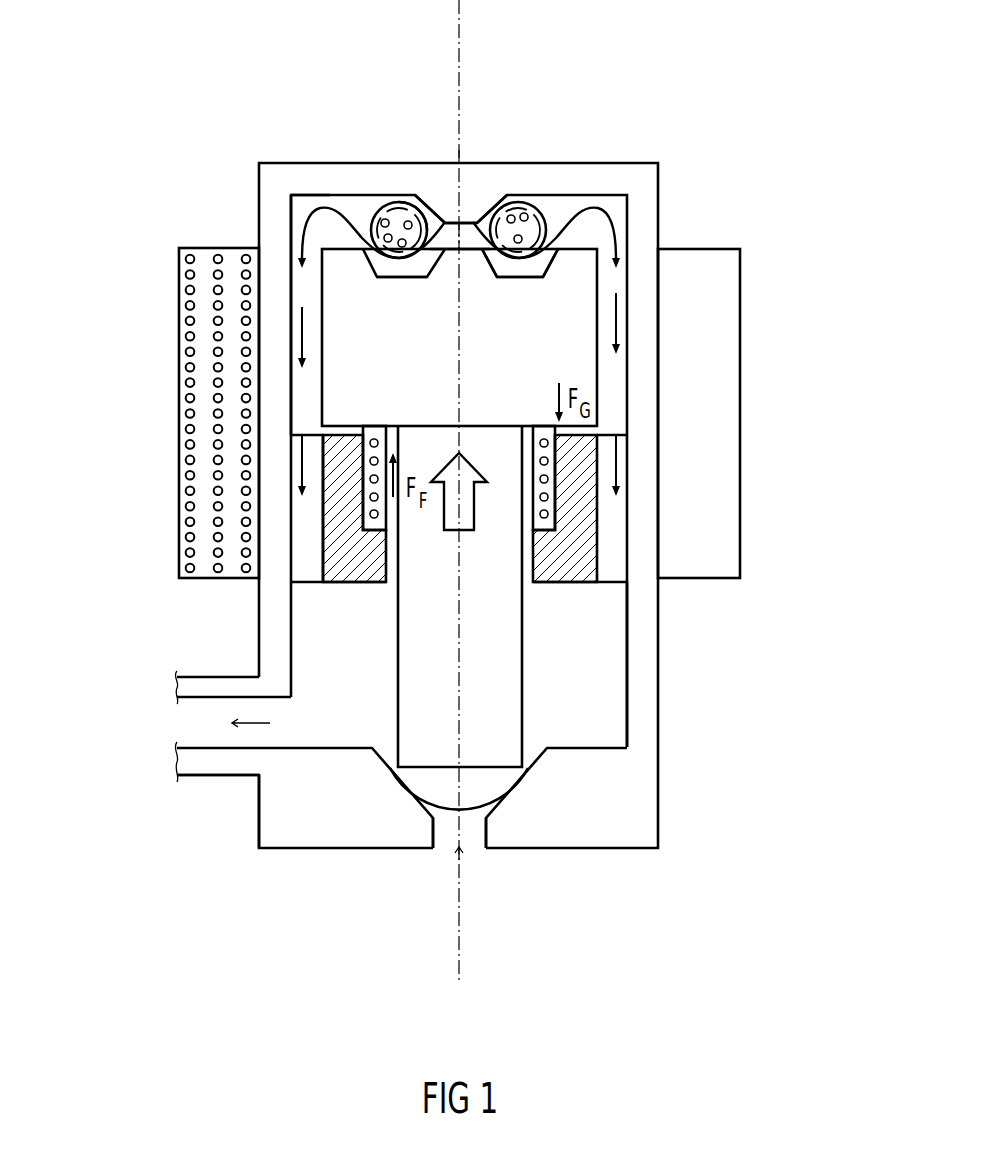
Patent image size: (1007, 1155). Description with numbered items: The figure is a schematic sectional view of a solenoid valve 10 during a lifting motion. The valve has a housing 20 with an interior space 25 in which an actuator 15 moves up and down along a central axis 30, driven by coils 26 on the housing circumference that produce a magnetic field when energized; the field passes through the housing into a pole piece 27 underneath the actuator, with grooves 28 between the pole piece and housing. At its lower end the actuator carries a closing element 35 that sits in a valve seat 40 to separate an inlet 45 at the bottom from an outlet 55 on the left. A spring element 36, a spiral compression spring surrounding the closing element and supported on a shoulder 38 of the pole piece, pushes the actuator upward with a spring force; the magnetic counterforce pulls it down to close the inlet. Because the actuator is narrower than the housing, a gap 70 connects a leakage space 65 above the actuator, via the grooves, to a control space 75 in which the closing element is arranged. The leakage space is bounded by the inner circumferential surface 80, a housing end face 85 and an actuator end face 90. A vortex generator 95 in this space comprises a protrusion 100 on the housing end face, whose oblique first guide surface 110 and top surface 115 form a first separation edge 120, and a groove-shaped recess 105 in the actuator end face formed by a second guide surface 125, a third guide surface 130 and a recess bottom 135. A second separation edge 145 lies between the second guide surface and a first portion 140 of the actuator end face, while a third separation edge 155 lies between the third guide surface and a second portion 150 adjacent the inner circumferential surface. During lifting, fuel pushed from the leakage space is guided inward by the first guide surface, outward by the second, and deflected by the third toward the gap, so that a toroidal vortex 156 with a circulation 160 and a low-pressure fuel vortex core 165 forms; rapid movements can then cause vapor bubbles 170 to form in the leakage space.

The solenoid valve 10 is at (622, 118).
The actuator 15 is at (577, 297).
The housing 20 is at (622, 177).
The interior space 25 is at (303, 612).
The coils 26 is at (180, 420).
The pole piece 27 is at (340, 505).
The grooves 28 is at (312, 563).
The central axis 30 is at (458, 942).
The closing element 35 is at (500, 700).
The spring element 36 is at (365, 517).
The shoulder 38 is at (377, 553).
The valve seat 40 is at (400, 780).
The inlet 45 is at (470, 830).
The outlet 55 is at (177, 765).
The leakage space 65 is at (335, 243).
The gap 70 is at (298, 397).
The control space 75 is at (303, 733).
The inner circumferential surface 80 is at (627, 680).
The housing end face 85 is at (525, 210).
The actuator end face 90 is at (577, 238).
The vortex generator 95 is at (453, 152).
The protrusion 100 is at (495, 196).
The recess 105 is at (303, 215).
The first guide surface 110 is at (476, 220).
The top surface 115 is at (440, 262).
The first separation edge 120 is at (478, 200).
The second guide surface 125 is at (490, 290).
The third guide surface 130 is at (530, 270).
The recess bottom 135 is at (392, 280).
The first portion 140 is at (608, 213).
The second separation edge 145 is at (440, 228).
The second portion 150 is at (328, 240).
The third separation edge 155 is at (297, 273).
The vortex 156 is at (369, 205).
The circulation 160 is at (516, 278).
The fuel vortex core 165 is at (372, 218).
The vapor bubbles 170 is at (392, 210).